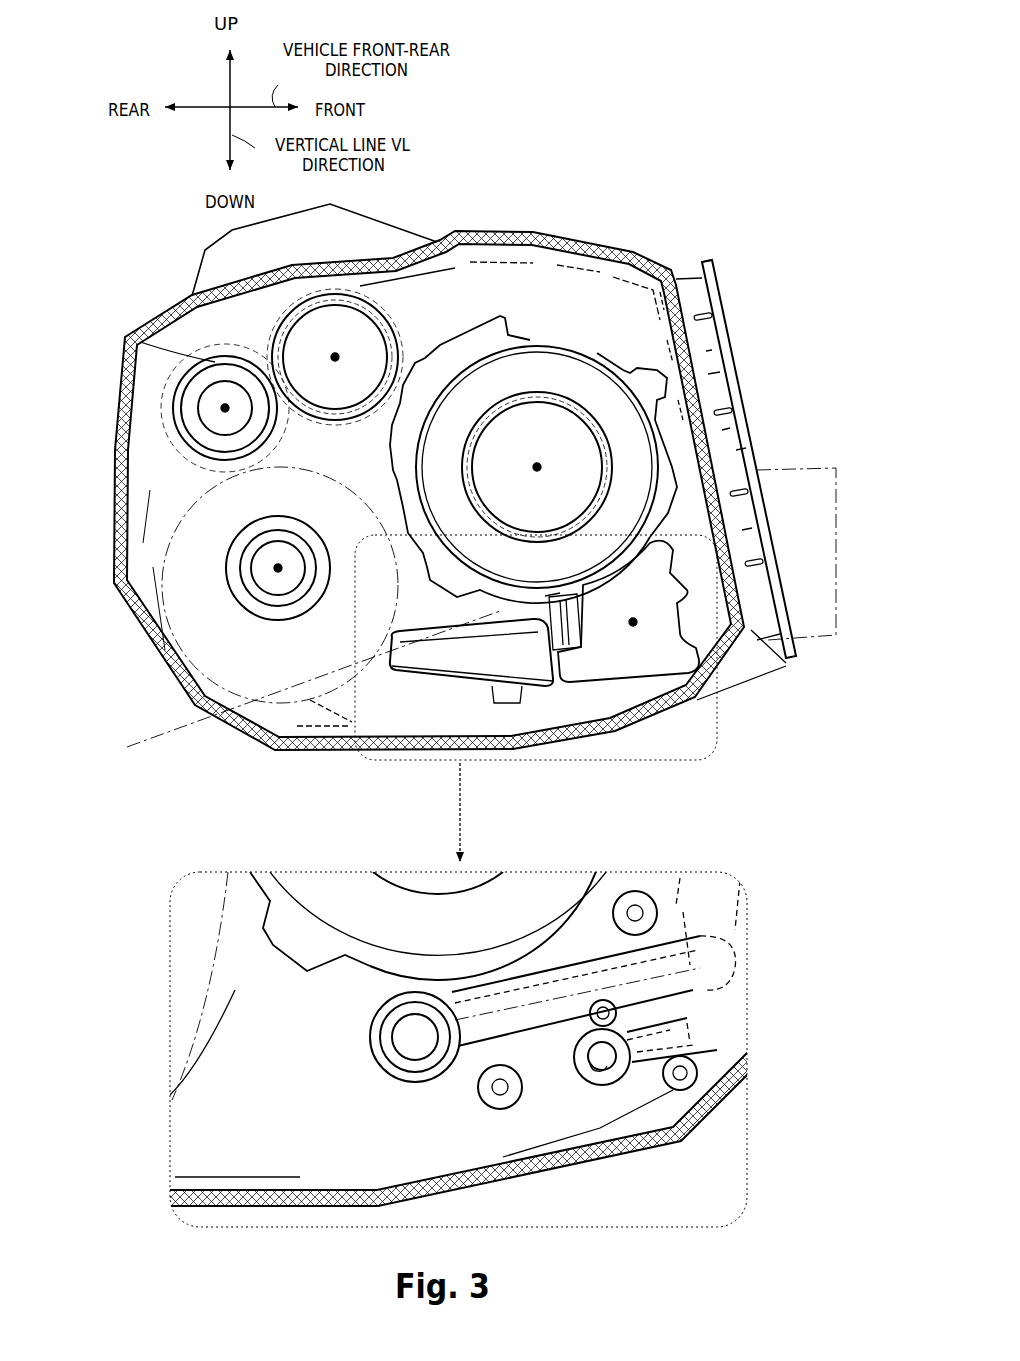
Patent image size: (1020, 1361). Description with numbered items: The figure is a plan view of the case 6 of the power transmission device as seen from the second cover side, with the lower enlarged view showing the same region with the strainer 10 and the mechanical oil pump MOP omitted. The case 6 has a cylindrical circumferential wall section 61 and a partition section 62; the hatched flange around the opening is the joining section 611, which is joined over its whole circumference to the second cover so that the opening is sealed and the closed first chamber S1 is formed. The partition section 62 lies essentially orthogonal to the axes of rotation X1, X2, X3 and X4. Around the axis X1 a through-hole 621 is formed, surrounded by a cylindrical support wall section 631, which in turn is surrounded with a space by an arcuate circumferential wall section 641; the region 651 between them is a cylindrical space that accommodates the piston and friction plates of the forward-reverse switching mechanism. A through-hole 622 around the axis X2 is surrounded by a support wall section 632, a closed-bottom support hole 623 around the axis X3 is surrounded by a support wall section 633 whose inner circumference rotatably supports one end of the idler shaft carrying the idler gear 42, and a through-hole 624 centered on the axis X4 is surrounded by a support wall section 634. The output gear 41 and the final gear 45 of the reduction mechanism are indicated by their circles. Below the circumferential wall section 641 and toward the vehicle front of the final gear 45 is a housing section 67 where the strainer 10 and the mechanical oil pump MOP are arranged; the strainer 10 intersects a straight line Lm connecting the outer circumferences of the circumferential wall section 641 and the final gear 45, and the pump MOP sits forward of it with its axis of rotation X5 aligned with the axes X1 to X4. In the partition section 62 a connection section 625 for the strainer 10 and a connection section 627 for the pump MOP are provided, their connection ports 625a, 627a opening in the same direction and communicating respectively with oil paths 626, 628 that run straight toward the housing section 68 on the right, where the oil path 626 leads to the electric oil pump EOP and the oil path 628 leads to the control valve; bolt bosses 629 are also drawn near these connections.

The case 6 is at (706, 204).
The circumferential wall section 61 is at (478, 232).
The joining section 611 is at (605, 250).
The partition section 62 is at (530, 270).
The first chamber S1 is at (500, 307).
The circumferential wall section 641 is at (540, 344).
The region 651 is at (562, 384).
The through-hole 621 is at (562, 444).
The cylindrical support wall section 631 is at (577, 410).
The through-hole 622 is at (355, 399).
The cylindrical support wall section 632 is at (328, 300).
The output gear 41 is at (388, 330).
The cylindrical support wall section 633 is at (220, 382).
The support hole 623 is at (207, 399).
The idler gear 42 is at (237, 360).
The cylindrical support wall section 634 is at (258, 528).
The through-hole 624 is at (295, 545).
The final gear 45 is at (125, 560).
The axis of rotation X1 is at (535, 470).
The axis of rotation X2 is at (336, 354).
The axis of rotation X3 is at (222, 409).
The axis of rotation X4 is at (274, 562).
The axis of rotation X5 is at (635, 620).
The straight line Lm is at (295, 616).
The mechanical oil pump MOP is at (512, 648).
The electric oil pump EOP is at (812, 467).
The housing section 68 is at (790, 662).
The strainer 10 is at (422, 680).
The connection section 625 is at (372, 1006).
The connection port 625a is at (388, 1044).
The oil path 626 is at (505, 990).
The bolt hole 629 is at (598, 1018).
The connection section 627 is at (575, 1078).
The oil path 628 is at (634, 1060).
The connection port 627a is at (603, 1063).
The housing section 67 is at (282, 1124).